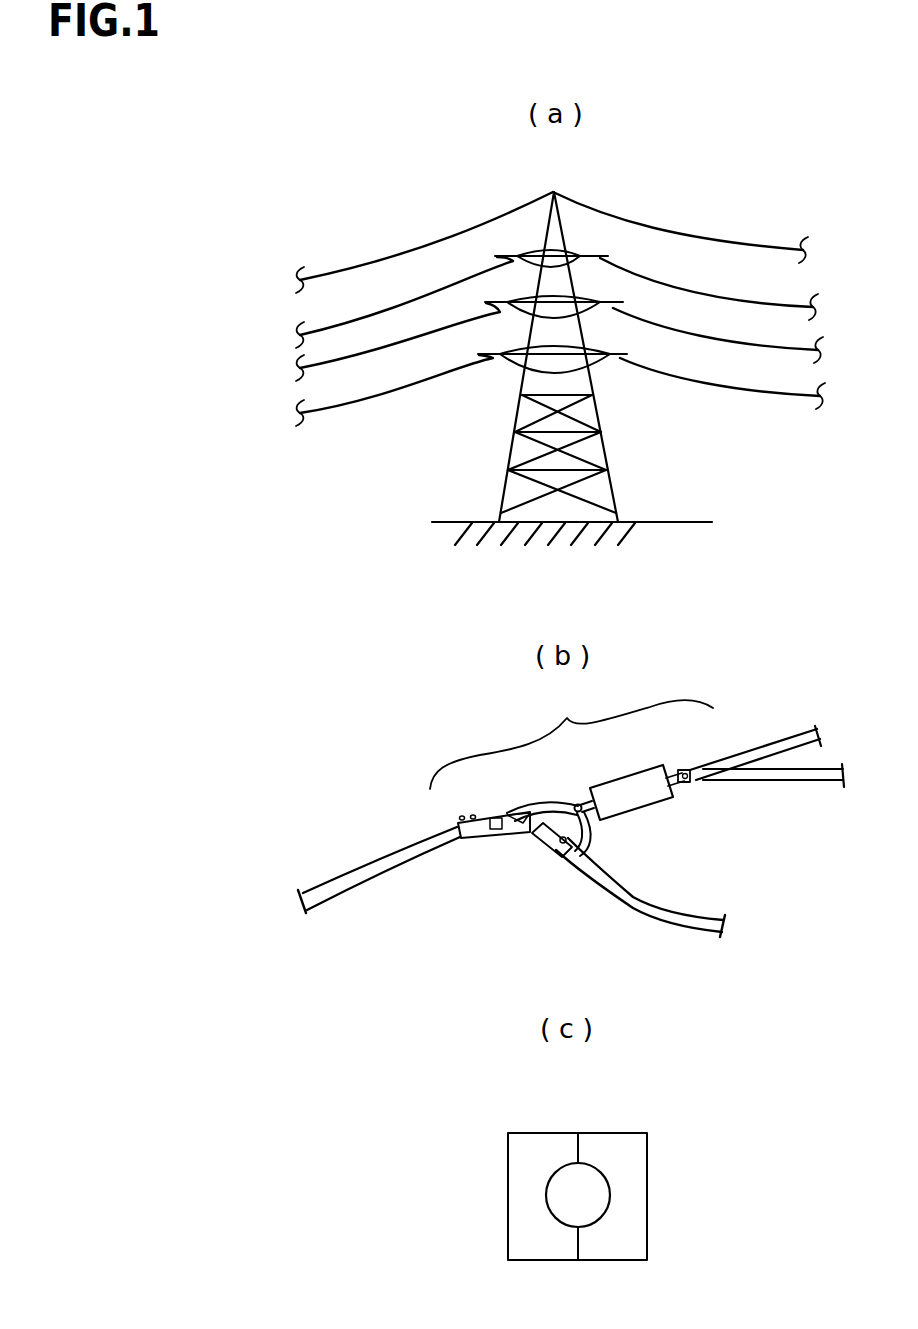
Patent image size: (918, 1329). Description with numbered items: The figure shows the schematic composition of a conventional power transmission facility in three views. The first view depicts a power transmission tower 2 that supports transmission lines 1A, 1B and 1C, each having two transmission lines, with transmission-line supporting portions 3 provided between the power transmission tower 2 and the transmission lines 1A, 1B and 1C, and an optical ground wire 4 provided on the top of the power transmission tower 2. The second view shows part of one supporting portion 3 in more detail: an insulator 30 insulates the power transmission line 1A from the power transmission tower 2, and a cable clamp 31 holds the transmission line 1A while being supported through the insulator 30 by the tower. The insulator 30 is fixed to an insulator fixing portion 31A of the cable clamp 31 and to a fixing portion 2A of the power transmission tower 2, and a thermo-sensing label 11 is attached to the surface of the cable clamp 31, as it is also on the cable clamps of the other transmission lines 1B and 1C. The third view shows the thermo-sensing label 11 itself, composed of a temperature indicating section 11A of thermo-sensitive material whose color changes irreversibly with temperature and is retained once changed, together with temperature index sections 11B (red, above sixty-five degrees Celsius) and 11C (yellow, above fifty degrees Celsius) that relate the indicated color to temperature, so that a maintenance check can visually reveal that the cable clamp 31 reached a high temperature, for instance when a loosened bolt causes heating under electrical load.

The optical ground wire 4 is at (365, 262).
The transmission line 1A is at (363, 316).
The transmission line 1B is at (365, 362).
The transmission line 1C is at (362, 412).
The transmission-line supporting portion 3 is at (513, 257).
The power transmission tower 2 is at (508, 448).
The fixing portion 2A is at (683, 770).
The thermo-sensing label 11 is at (494, 817).
The temperature indicating section 11A is at (568, 1193).
The temperature index section 11B is at (512, 1205).
The temperature index section 11C is at (636, 1205).
The insulator 30 is at (635, 805).
The cable clamp 31 is at (537, 805).
The insulator fixing portion 31A is at (579, 805).